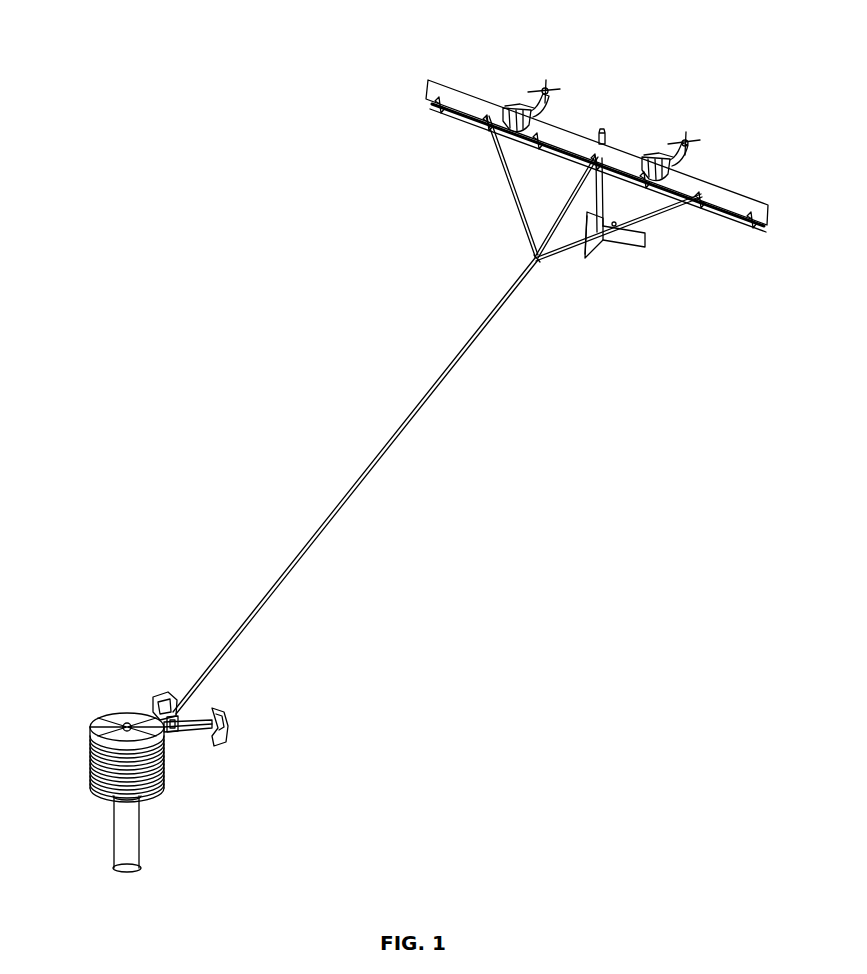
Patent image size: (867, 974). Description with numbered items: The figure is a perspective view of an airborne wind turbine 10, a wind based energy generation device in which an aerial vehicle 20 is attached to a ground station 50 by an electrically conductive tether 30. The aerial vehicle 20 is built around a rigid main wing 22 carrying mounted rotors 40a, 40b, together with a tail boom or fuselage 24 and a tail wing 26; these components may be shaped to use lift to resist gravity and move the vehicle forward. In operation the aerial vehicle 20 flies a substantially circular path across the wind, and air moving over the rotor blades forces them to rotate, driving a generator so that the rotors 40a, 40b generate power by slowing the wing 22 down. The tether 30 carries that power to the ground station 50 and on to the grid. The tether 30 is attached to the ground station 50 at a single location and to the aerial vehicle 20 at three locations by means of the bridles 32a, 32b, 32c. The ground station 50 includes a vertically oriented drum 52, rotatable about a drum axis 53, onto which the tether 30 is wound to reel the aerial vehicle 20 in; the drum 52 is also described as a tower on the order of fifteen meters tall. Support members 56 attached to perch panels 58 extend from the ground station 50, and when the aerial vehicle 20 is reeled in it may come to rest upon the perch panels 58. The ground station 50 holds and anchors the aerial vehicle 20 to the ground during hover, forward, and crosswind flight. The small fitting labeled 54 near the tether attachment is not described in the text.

The airborne wind turbine 10 is at (244, 105).
The aerial vehicle 20 is at (617, 142).
The main wing 22 is at (723, 197).
The tail boom 24 is at (607, 187).
The tail wing 26 is at (602, 248).
The electrically conductive tether 30 is at (472, 340).
The bridle 32a is at (500, 157).
The bridle 32b is at (563, 213).
The bridle 32c is at (667, 203).
The rotor 40a is at (514, 109).
The rotor 40b is at (545, 90).
The ground station 50 is at (50, 702).
The drum 52 is at (157, 780).
The drum axis 53 is at (125, 727).
The tether attachment block 54 is at (185, 722).
The support member 56 is at (192, 735).
The perch panel 58 is at (163, 698).